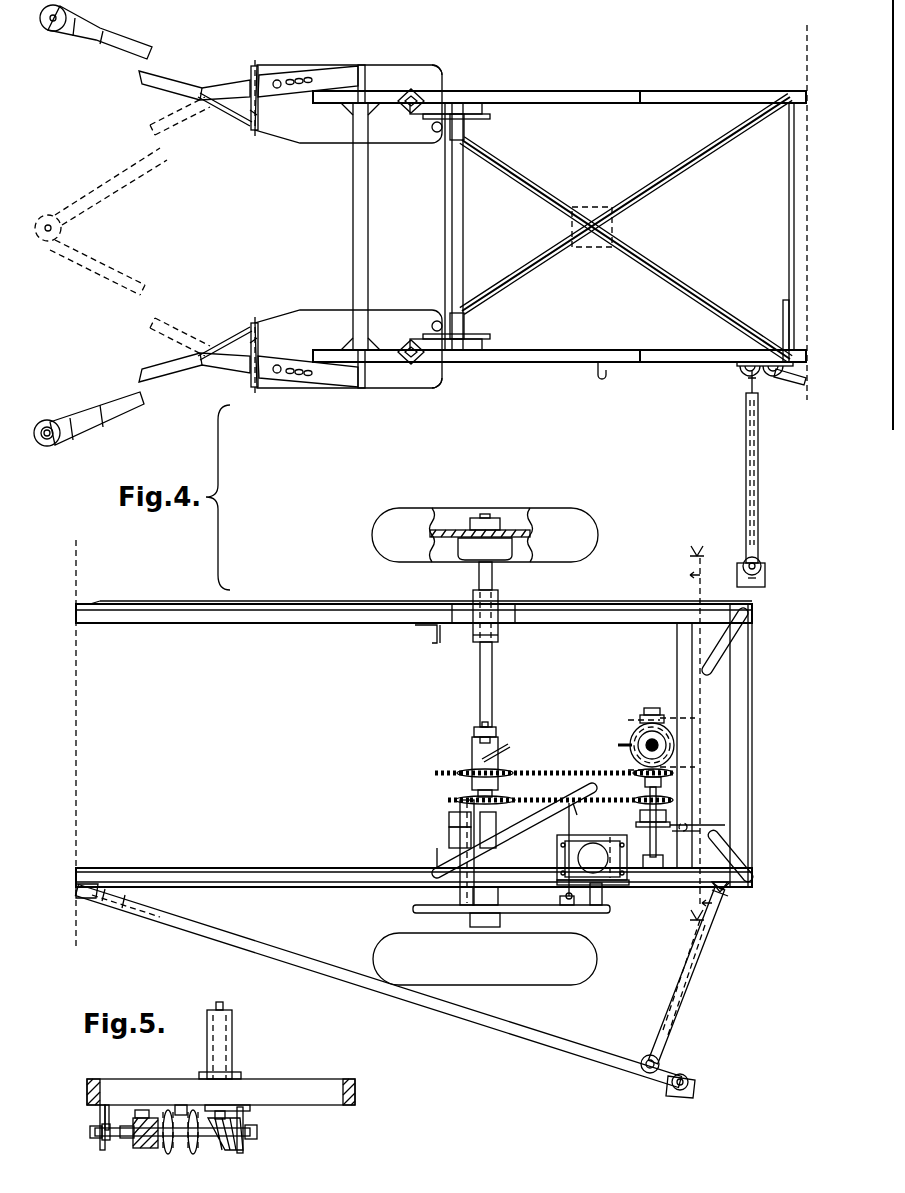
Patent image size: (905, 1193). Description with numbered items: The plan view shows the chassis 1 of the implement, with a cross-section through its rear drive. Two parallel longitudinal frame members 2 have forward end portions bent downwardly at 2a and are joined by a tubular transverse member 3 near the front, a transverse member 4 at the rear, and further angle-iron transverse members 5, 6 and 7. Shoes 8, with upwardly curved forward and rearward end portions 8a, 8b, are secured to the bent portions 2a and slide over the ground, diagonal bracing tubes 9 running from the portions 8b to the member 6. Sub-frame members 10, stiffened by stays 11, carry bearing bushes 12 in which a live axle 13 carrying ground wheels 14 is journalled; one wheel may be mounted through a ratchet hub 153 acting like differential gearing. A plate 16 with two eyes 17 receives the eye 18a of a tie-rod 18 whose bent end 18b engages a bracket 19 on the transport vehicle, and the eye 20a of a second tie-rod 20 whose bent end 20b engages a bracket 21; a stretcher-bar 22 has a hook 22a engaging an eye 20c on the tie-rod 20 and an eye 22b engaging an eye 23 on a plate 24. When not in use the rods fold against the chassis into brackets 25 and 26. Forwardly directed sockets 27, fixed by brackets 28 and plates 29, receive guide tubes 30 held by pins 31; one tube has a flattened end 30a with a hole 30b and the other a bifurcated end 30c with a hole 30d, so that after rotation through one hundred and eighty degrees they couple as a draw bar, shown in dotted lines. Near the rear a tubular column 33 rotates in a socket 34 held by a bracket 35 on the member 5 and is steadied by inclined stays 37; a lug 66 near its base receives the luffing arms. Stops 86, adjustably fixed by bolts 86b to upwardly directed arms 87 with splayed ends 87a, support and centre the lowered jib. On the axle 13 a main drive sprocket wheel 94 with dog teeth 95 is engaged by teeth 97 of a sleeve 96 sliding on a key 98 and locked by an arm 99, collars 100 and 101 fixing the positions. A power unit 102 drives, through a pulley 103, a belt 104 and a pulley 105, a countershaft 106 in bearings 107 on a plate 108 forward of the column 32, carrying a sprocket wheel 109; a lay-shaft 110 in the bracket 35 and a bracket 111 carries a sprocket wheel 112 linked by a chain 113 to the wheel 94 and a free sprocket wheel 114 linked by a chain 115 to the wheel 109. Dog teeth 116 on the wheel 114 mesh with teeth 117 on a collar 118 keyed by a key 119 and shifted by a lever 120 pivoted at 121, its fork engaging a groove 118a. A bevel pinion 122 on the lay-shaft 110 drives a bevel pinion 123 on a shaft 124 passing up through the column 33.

In FIG. 4, the chassis 1 is at (602, 74).
In FIG. 5, the chassis 1 is at (363, 1079).
In FIG. 4, the longitudinal frame members 2 is at (698, 91).
In FIG. 5, the longitudinal frame members 2 is at (87, 1093).
In FIG. 4, the downwardly bent forward end portions 2a is at (548, 91).
In FIG. 4, the tubular transverse member 3 is at (353, 240).
In FIG. 4, the transverse member 4 is at (752, 741).
In FIG. 4, the transverse member 5 is at (677, 662).
In FIG. 5, the transverse member 5 is at (302, 1079).
In FIG. 4, the transverse member 6 is at (789, 222).
In FIG. 4, the transverse member 7 is at (445, 232).
In FIG. 4, the shoes 8 is at (296, 143).
In FIG. 4, the upwardly curved forward end portions 8a is at (260, 120).
In FIG. 4, the upwardly curved rearward end portions 8b is at (443, 76).
In FIG. 4, the bracing tubes 9 is at (624, 205).
In FIG. 4, the sub-frame members 10 is at (358, 604).
In FIG. 4, the stays 11 is at (417, 645).
In FIG. 4, the bearing bushes 12 is at (500, 600).
In FIG. 4, the live axle 13 is at (492, 668).
In FIG. 4, the ground wheels 14 is at (570, 508).
In FIG. 4, the upwardly directed plate 16 is at (748, 360).
In FIG. 4, the eyes 17 is at (742, 375).
In FIG. 4, the tie-rod 18 is at (746, 468).
In FIG. 4, the eye 18a is at (746, 395).
In FIG. 4, the downwardly bent portion 18b is at (758, 560).
In FIG. 4, the bracket 19 is at (742, 568).
In FIG. 4, the second tie-rod 20 is at (290, 965).
In FIG. 4, the eye 20a is at (795, 390).
In FIG. 4, the downwardly bent portion 20b is at (688, 1076).
In FIG. 4, the eye 20c is at (645, 1058).
In FIG. 4, the bracket 21 is at (668, 1090).
In FIG. 4, the stretcher-bar 22 is at (690, 982).
In FIG. 4, the hook 22a is at (655, 1060).
In FIG. 4, the eye 22b is at (722, 905).
In FIG. 4, the eye 23 is at (728, 888).
In FIG. 4, the plate 24 is at (720, 882).
In FIG. 4, the bracket 25 is at (604, 378).
In FIG. 4, the bracket 26 is at (568, 898).
In FIG. 4, the sockets 27 is at (318, 68).
In FIG. 4, the brackets 28 is at (252, 66).
In FIG. 4, the plates 29 is at (365, 70).
In FIG. 4, the guide tubes 30 is at (166, 88).
In FIG. 4, the flattened end portion 30a is at (62, 262).
In FIG. 4, the hole 30b is at (47, 446).
In FIG. 4, the bifurcated end portion 30c is at (85, 38).
In FIG. 4, the hole 30d is at (56, 30).
In FIG. 4, the pins 31 is at (280, 80).
In FIG. 4, the column 32 is at (235, 120).
In FIG. 4, the rotatable column 33 is at (674, 745).
In FIG. 5, the rotatable column 33 is at (207, 1040).
In FIG. 4, the socket 34 is at (632, 735).
In FIG. 5, the socket 34 is at (236, 1074).
In FIG. 4, the bracket 35 is at (670, 720).
In FIG. 5, the bracket 35 is at (245, 1116).
In FIG. 4, the inclined stays 37 is at (520, 832).
In FIG. 4, the lug 66 is at (618, 745).
In FIG. 4, the stops 86 is at (465, 135).
In FIG. 4, the securing bolts 86b is at (492, 117).
In FIG. 4, the upwardly directed arms 87 is at (465, 106).
In FIG. 4, the splayed upper end portions 87a is at (418, 92).
In FIG. 4, the main drive sprocket wheel 94 is at (438, 770).
In FIG. 4, the ratchet or dog teeth 95 is at (502, 773).
In FIG. 4, the sleeve 96 is at (476, 730).
In FIG. 4, the ratchet teeth 97 is at (472, 748).
In FIG. 4, the key 98 is at (492, 738).
In FIG. 4, the locking and operating arm 99 is at (510, 746).
In FIG. 4, the collar 100 is at (500, 795).
In FIG. 4, the collar 101 is at (488, 722).
In FIG. 4, the power unit 102 is at (620, 880).
In FIG. 4, the pulley 103 is at (604, 912).
In FIG. 4, the drive belt 104 is at (568, 915).
In FIG. 4, the pulley 105 is at (440, 913).
In FIG. 4, the countershaft 106 is at (460, 808).
In FIG. 4, the bearings 107 is at (449, 828).
In FIG. 4, the supporting plate 108 is at (449, 840).
In FIG. 4, the sprocket wheel 109 is at (448, 798).
In FIG. 4, the lay-shaft 110 is at (663, 866).
In FIG. 5, the lay-shaft 110 is at (109, 1118).
In FIG. 4, the bracket 111 is at (650, 887).
In FIG. 5, the bracket 111 is at (100, 1120).
In FIG. 4, the sprocket wheel 112 is at (661, 784).
In FIG. 5, the sprocket wheel 112 is at (182, 1105).
In FIG. 4, the endless driving chain 113 is at (567, 772).
In FIG. 4, the sprocket-wheel 114 is at (615, 812).
In FIG. 5, the sprocket-wheel 114 is at (195, 1154).
In FIG. 4, the endless driving chain 115 is at (548, 802).
In FIG. 4, the ratchet or dog teeth 116 is at (673, 800).
In FIG. 5, the ratchet or dog teeth 116 is at (170, 1154).
In FIG. 4, the ratchet or dog teeth 117 is at (660, 808).
In FIG. 5, the ratchet or dog teeth 117 is at (148, 1140).
In FIG. 4, the collar 118 is at (640, 816).
In FIG. 5, the collar 118 is at (90, 1135).
In FIG. 4, the groove 118a is at (601, 858).
In FIG. 5, the groove 118a is at (128, 1140).
In FIG. 4, the key 119 is at (700, 831).
In FIG. 5, the key 119 is at (138, 1118).
In FIG. 4, the lever 120 is at (672, 822).
In FIG. 5, the lever 120 is at (108, 1142).
In FIG. 4, the pivot 121 is at (725, 822).
In FIG. 5, the pivot 121 is at (145, 1110).
In FIG. 4, the bevel pinion 122 is at (644, 712).
In FIG. 5, the bevel pinion 122 is at (250, 1148).
In FIG. 4, the bevel pinion 123 is at (695, 718).
In FIG. 5, the bevel pinion 123 is at (222, 1125).
In FIG. 4, the shaft 124 is at (633, 766).
In FIG. 5, the shaft 124 is at (219, 1002).
In FIG. 4, the ratchet hub 153 is at (463, 560).